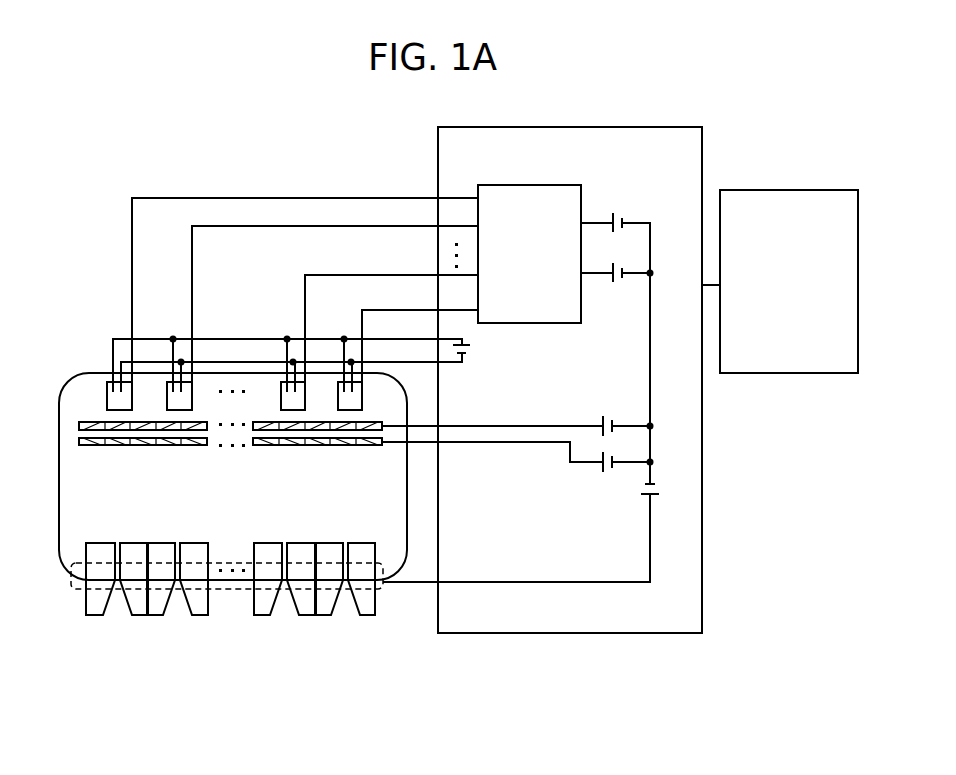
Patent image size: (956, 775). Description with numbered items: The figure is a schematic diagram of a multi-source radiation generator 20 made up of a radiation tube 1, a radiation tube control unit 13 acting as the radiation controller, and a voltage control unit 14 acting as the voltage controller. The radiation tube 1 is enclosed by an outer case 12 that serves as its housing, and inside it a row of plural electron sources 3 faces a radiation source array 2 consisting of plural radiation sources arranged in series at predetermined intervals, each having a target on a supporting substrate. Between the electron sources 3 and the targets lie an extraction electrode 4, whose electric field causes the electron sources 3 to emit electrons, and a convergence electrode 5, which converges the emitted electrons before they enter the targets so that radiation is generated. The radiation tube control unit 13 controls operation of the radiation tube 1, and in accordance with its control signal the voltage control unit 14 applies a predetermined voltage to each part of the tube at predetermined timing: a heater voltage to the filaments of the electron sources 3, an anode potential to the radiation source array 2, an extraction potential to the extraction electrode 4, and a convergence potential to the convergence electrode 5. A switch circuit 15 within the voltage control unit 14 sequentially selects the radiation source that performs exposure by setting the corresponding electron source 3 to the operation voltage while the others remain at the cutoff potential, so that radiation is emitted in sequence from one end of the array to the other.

The radiation tube 1 is at (350, 642).
The radiation source array 2 is at (71, 586).
The electron source 3 is at (106, 398).
The extraction electrode 4 is at (78, 426).
The convergence electrode 5 is at (78, 442).
The outer case 12 is at (58, 525).
The radiation tube control unit 13 is at (755, 374).
The voltage control unit 14 is at (598, 634).
The switch circuit 15 is at (530, 185).
The radiation generator 20 is at (326, 122).